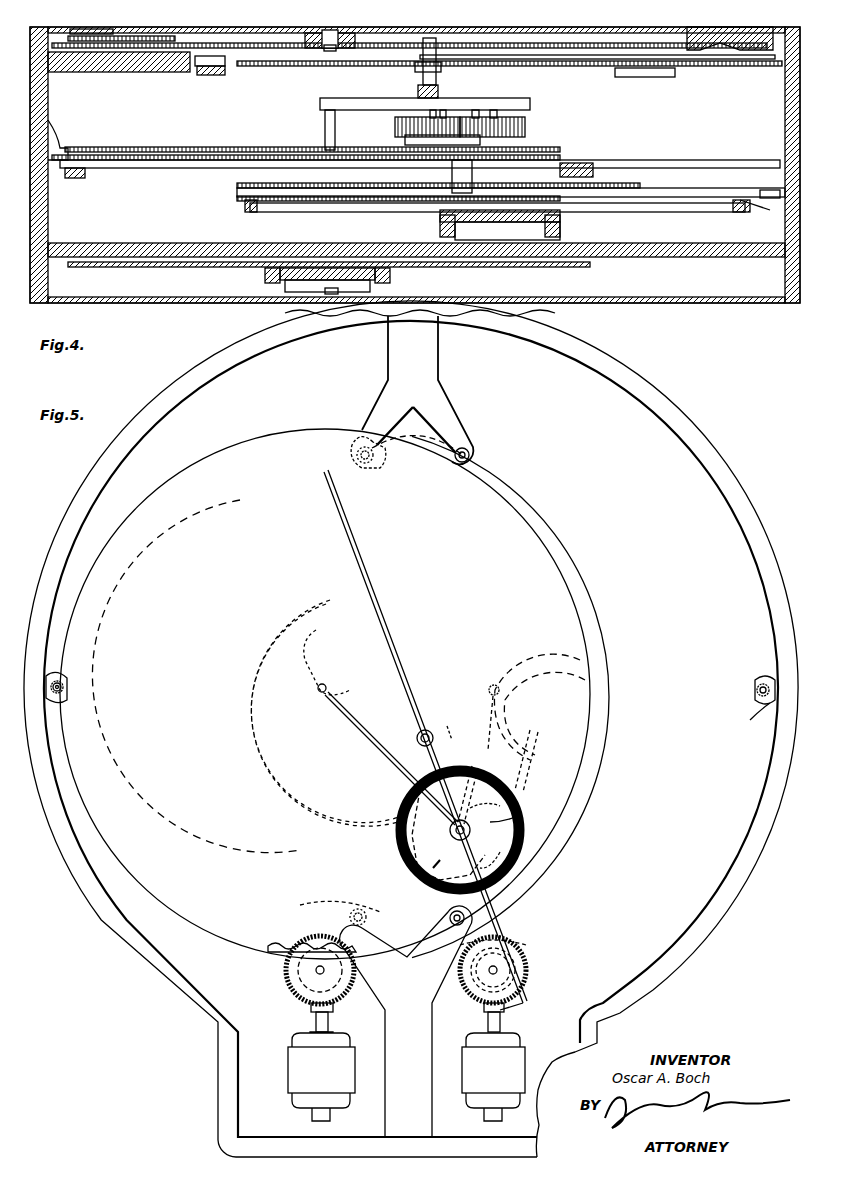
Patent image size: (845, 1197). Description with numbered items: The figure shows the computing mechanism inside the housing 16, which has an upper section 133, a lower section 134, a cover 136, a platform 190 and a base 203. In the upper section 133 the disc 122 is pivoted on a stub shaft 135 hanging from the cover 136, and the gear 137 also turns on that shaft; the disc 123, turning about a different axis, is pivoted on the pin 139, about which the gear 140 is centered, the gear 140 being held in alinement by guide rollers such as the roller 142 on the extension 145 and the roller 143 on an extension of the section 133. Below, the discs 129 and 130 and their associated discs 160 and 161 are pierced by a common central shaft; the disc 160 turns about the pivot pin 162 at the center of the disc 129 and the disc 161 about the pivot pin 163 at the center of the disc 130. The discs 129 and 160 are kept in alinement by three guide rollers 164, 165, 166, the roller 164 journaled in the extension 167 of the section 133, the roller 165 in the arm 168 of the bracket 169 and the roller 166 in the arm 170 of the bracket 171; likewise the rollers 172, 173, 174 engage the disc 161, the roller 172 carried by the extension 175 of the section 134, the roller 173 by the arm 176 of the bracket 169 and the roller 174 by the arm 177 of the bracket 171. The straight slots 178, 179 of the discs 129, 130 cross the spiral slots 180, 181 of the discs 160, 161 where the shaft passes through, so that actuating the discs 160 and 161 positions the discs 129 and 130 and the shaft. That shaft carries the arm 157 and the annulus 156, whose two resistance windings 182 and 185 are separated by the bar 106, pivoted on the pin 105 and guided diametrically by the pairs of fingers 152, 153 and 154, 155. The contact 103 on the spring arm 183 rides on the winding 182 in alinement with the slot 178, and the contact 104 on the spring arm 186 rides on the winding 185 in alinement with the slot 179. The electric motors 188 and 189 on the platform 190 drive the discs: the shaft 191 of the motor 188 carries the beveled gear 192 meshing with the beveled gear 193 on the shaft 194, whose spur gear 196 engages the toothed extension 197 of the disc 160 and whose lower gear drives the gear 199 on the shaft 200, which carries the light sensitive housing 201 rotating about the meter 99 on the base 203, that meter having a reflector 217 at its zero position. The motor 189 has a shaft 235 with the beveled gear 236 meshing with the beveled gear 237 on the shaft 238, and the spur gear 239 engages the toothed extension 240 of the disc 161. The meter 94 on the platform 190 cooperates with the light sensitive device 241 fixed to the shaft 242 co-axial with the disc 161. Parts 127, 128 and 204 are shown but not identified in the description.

In FIG. 4, the housing 16 is at (775, 296).
In FIG. 5, the housing 16 is at (116, 958).
In FIG. 4, the meter 94 is at (530, 240).
In FIG. 4, the meter 99 is at (370, 288).
In FIG. 5, the contact 103 is at (410, 786).
In FIG. 5, the contact 104 is at (476, 766).
In FIG. 4, the pin 105 is at (420, 92).
In FIG. 5, the pin 105 is at (425, 730).
In FIG. 4, the rod or bar 106 is at (352, 98).
In FIG. 5, the rod or bar 106 is at (380, 630).
In FIG. 4, the disc 122 is at (150, 40).
In FIG. 4, the disc 123 is at (612, 55).
In FIG. 4, the cover block 127 is at (105, 24).
In FIG. 4, the bearing block 128 is at (740, 24).
In FIG. 4, the disc 129 is at (210, 132).
In FIG. 5, the disc 129 is at (263, 432).
In FIG. 4, the disc 130 is at (650, 185).
In FIG. 5, the disc 130 is at (600, 450).
In FIG. 4, the upper section 133 is at (40, 86).
In FIG. 4, the lower section 134 is at (40, 232).
In FIG. 4, the stub shaft 135 is at (336, 30).
In FIG. 4, the cover 136 is at (232, 30).
In FIG. 4, the gear 137 is at (140, 46).
In FIG. 4, the pin 139 is at (508, 64).
In FIG. 4, the gear 140 is at (292, 67).
In FIG. 4, the guide roller 142 is at (215, 76).
In FIG. 4, the guide roller 143 is at (640, 66).
In FIG. 4, the extension 145 is at (198, 68).
In FIG. 4, the finger 152 is at (428, 110).
In FIG. 5, the finger 152 is at (440, 728).
In FIG. 4, the finger 153 is at (444, 110).
In FIG. 5, the finger 153 is at (455, 760).
In FIG. 4, the finger 154 is at (496, 110).
In FIG. 5, the finger 154 is at (490, 878).
In FIG. 4, the finger 155 is at (476, 110).
In FIG. 5, the finger 155 is at (495, 898).
In FIG. 4, the annulus 156 is at (508, 128).
In FIG. 5, the annulus 156 is at (525, 787).
In FIG. 5, the arm 157 is at (508, 848).
In FIG. 4, the disc 160 is at (222, 160).
In FIG. 4, the disc 161 is at (665, 193).
In FIG. 4, the pivot pin 162 is at (330, 148).
In FIG. 5, the pivot pin 162 is at (320, 690).
In FIG. 4, the pivot pin 163 is at (520, 188).
In FIG. 5, the pivot pin 163 is at (500, 690).
In FIG. 4, the guide roller 164 is at (72, 178).
In FIG. 5, the guide roller 164 is at (62, 686).
In FIG. 5, the guide roller 165 is at (460, 465).
In FIG. 5, the guide roller 166 is at (448, 914).
In FIG. 4, the extension 167 is at (60, 144).
In FIG. 5, the extension 167 is at (55, 678).
In FIG. 5, the arm 168 is at (445, 411).
In FIG. 5, the bracket 169 is at (425, 361).
In FIG. 5, the arm 170 is at (441, 950).
In FIG. 5, the bracket 171 is at (406, 1021).
In FIG. 4, the guide roller 172 is at (775, 190).
In FIG. 5, the guide roller 172 is at (755, 684).
In FIG. 5, the guide roller 173 is at (372, 468).
In FIG. 5, the guide roller 174 is at (340, 898).
In FIG. 4, the extension 175 is at (776, 212).
In FIG. 5, the extension 175 is at (768, 704).
In FIG. 5, the arm 176 is at (375, 418).
In FIG. 5, the arm 177 is at (385, 963).
In FIG. 5, the straight slot 178 is at (326, 700).
In FIG. 5, the straight slot 179 is at (500, 710).
In FIG. 5, the spiral slot 180 is at (195, 740).
In FIG. 5, the spiral slot 181 is at (576, 655).
In FIG. 4, the resistance winding 182 is at (395, 126).
In FIG. 5, the resistance winding 182 is at (400, 828).
In FIG. 4, the spring arm 183 is at (412, 140).
In FIG. 5, the spring arm 183 is at (450, 832).
In FIG. 4, the resistance winding 185 is at (520, 122).
In FIG. 5, the resistance winding 185 is at (522, 816).
In FIG. 4, the spring arm 186 is at (490, 125).
In FIG. 5, the spring arm 186 is at (474, 808).
In FIG. 5, the electric motor 188 is at (321, 1076).
In FIG. 5, the electric motor 189 is at (493, 1077).
In FIG. 4, the platform 190 is at (706, 258).
In FIG. 5, the platform 190 is at (205, 990).
In FIG. 5, the shaft 191 is at (316, 1022).
In FIG. 5, the beveled gear 192 is at (311, 1008).
In FIG. 5, the beveled gear 193 is at (290, 984).
In FIG. 5, the shaft 194 is at (290, 966).
In FIG. 5, the spur gear 196 is at (316, 970).
In FIG. 4, the toothed extension 197 is at (596, 168).
In FIG. 5, the toothed extension 197 is at (270, 948).
In FIG. 4, the gear 199 is at (592, 266).
In FIG. 4, the shaft 200 is at (325, 262).
In FIG. 4, the light sensitive housing 201 is at (395, 272).
In FIG. 4, the base 203 is at (652, 303).
In FIG. 4, the bolt 204 is at (265, 275).
In FIG. 4, the reflector 217 is at (322, 290).
In FIG. 5, the shaft 235 is at (504, 1010).
In FIG. 5, the beveled gear 236 is at (520, 998).
In FIG. 5, the beveled gear 237 is at (520, 968).
In FIG. 5, the shaft 238 is at (512, 978).
In FIG. 5, the spur gear 239 is at (520, 940).
In FIG. 4, the toothed extension 240 is at (243, 210).
In FIG. 4, the light sensitive device 241 is at (440, 228).
In FIG. 4, the shaft 242 is at (482, 220).